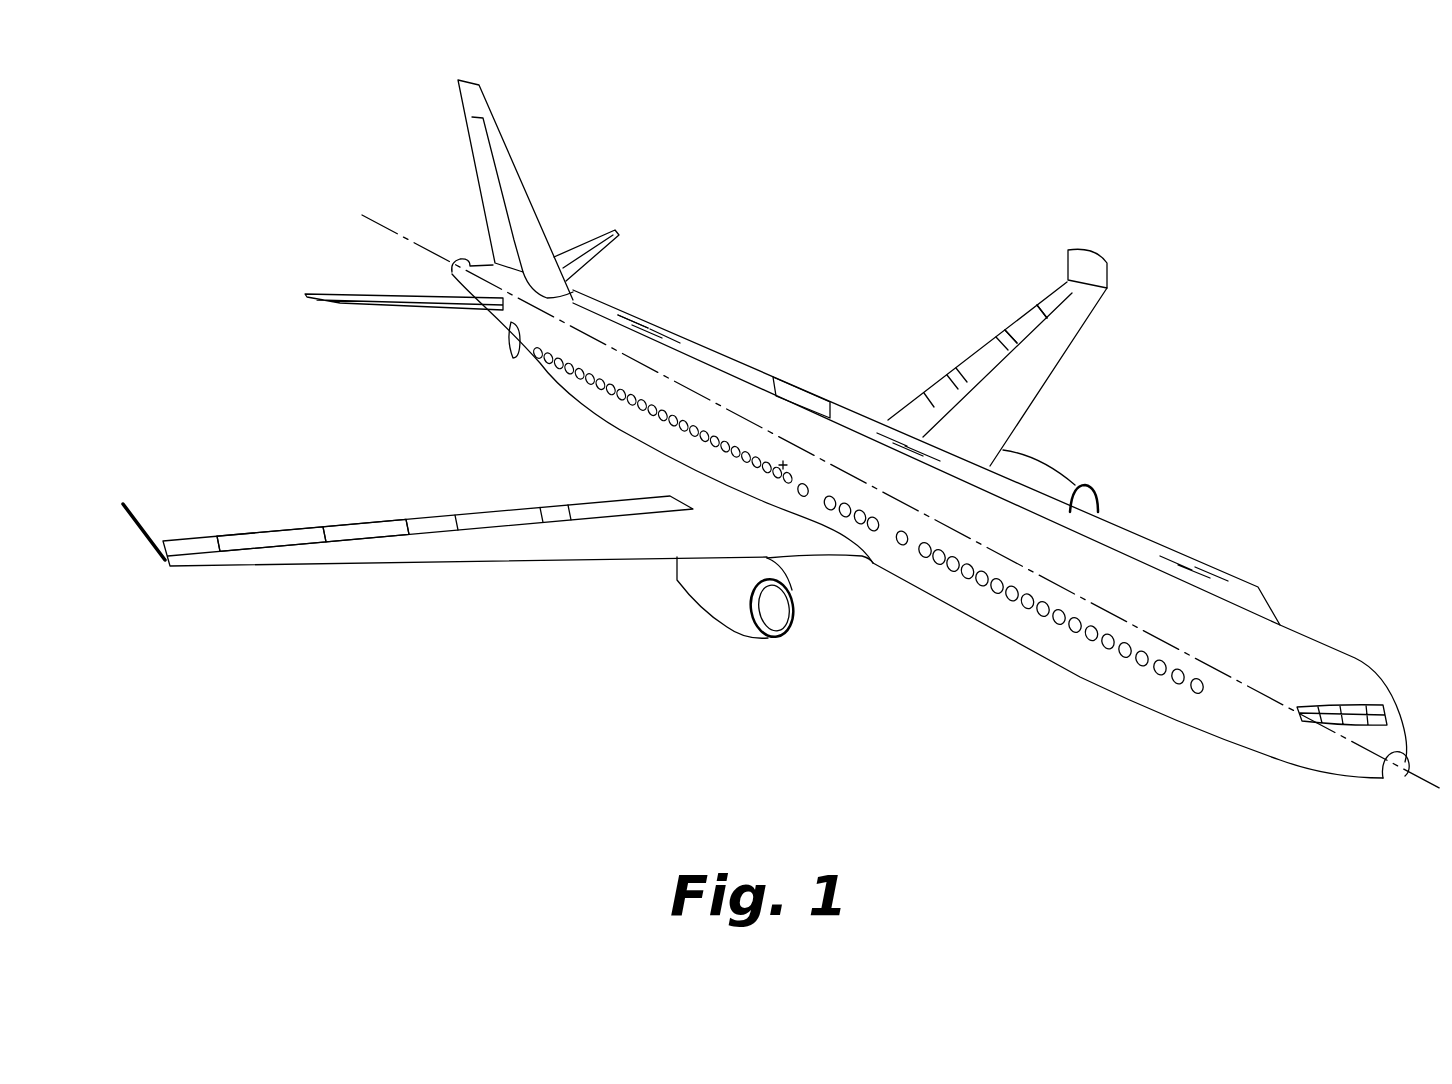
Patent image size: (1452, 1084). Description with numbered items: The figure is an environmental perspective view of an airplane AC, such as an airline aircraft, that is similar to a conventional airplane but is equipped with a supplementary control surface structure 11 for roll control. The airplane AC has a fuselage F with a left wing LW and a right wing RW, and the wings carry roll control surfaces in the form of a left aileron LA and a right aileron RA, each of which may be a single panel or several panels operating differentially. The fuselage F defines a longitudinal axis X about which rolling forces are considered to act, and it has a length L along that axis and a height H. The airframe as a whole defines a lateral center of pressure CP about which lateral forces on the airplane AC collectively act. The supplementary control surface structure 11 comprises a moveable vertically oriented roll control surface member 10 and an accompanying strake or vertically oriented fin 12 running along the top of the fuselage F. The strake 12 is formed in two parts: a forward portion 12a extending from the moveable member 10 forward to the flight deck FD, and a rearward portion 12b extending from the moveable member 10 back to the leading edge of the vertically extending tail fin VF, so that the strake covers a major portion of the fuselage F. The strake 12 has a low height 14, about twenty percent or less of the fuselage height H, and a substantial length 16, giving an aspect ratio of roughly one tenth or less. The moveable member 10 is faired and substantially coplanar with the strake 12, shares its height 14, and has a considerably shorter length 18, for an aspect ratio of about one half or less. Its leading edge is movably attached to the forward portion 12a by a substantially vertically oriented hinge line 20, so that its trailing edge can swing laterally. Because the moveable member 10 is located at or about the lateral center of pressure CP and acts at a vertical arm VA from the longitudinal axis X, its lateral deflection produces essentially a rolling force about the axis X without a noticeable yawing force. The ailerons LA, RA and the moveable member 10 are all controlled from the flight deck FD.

The moveable vertically oriented roll control surface member 10 is at (813, 406).
The supplementary control surface structure 11 is at (1168, 507).
The strake or vertically oriented fin 12 is at (750, 322).
The forward portion 12a is at (1230, 567).
The rearward portion 12b is at (635, 318).
The height 14 is at (1138, 556).
The length 16 is at (1395, 542).
The length 18 is at (842, 387).
The hinge or hinge line 20 is at (830, 410).
The vertically extending tail fin VF is at (521, 209).
The vertical arm VA is at (693, 388).
The left aileron LA is at (1010, 327).
The left wing LW is at (1067, 353).
The right aileron RA is at (343, 532).
The right wing RW is at (357, 565).
The lateral center of pressure CP is at (777, 465).
The height H is at (997, 499).
The fuselage F is at (1084, 570).
The flight deck FD is at (1323, 672).
The airplane AC is at (1082, 677).
The longitudinal axis X is at (1275, 707).
The length L is at (260, 377).